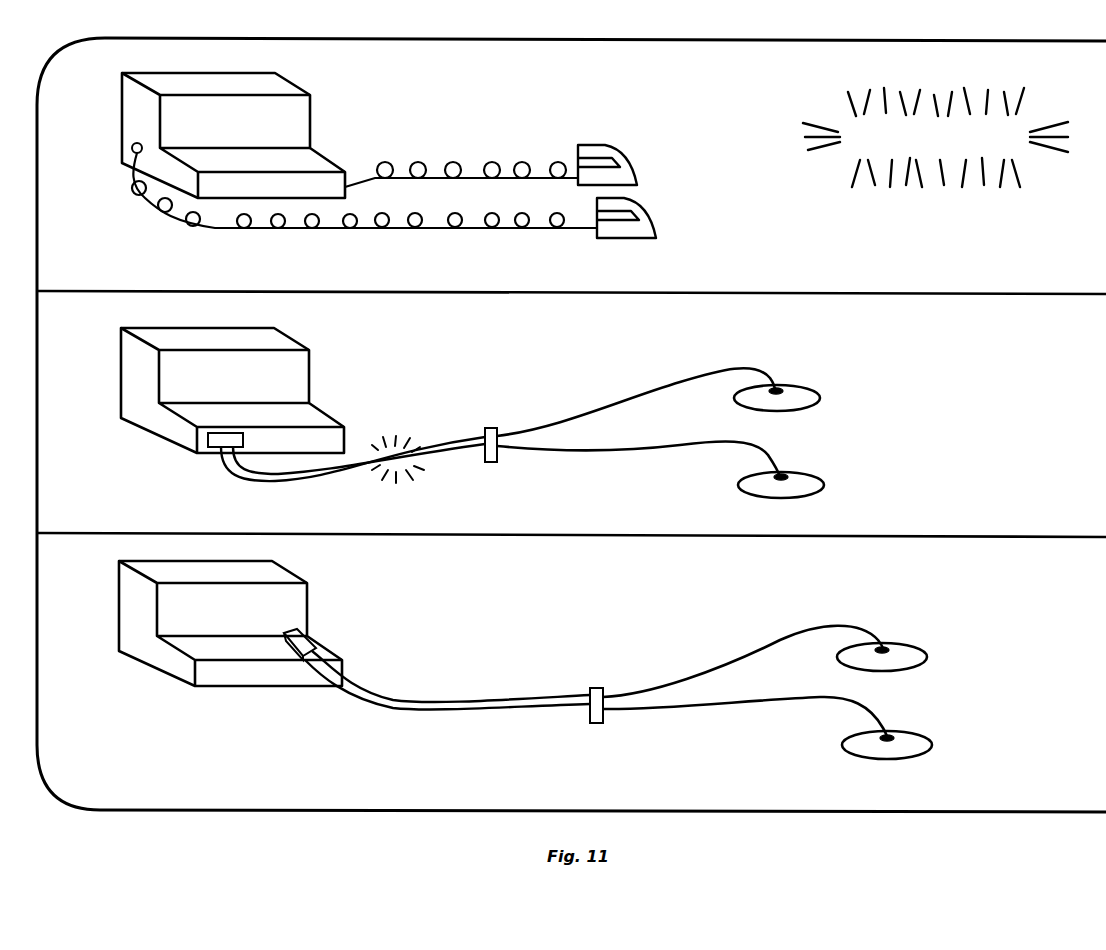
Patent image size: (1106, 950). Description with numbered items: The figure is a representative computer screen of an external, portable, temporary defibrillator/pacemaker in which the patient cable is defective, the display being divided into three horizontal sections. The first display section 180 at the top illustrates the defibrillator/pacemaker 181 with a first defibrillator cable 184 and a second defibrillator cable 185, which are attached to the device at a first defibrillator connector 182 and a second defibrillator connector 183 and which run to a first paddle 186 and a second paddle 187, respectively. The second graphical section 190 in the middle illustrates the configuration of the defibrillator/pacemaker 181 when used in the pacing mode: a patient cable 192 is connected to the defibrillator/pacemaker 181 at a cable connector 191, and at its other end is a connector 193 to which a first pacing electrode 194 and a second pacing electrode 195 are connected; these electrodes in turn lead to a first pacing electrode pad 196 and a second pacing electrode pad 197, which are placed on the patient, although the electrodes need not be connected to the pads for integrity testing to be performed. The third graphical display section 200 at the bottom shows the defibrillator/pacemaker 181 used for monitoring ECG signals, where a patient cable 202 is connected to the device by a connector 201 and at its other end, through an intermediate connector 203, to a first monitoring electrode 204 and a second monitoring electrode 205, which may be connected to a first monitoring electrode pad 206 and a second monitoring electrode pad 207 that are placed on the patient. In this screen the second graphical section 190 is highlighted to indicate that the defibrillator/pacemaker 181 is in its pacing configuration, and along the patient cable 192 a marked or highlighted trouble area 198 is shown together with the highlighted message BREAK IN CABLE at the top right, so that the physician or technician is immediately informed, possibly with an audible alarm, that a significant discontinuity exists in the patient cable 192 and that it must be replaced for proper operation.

The first display section 180 is at (348, 87).
The defibrillator/pacemaker 181 is at (137, 118).
The first defibrillator connector 182 is at (133, 148).
The second defibrillator connector 183 is at (355, 183).
The first defibrillator cable 184 is at (510, 230).
The second defibrillator cable 185 is at (492, 162).
The first paddle 186 is at (655, 220).
The second paddle 187 is at (633, 160).
The second graphical section 190 is at (348, 356).
The cable connector 191 is at (210, 442).
The patient cable 192 is at (360, 457).
The connector 193 is at (490, 428).
The first pacing electrode 194 is at (642, 392).
The second pacing electrode 195 is at (637, 448).
The first pacing electrode pad 196 is at (820, 396).
The second pacing electrode pad 197 is at (823, 483).
The trouble area 198 is at (940, 168).
The third graphical display section 200 is at (355, 605).
The connector 201 is at (282, 645).
The patient cable 202 is at (448, 707).
The cable splitter 203 is at (597, 688).
The first monitoring electrode 204 is at (716, 668).
The second monitoring electrode 205 is at (735, 712).
The first monitoring electrode pad 206 is at (928, 655).
The second monitoring electrode pad 207 is at (932, 745).